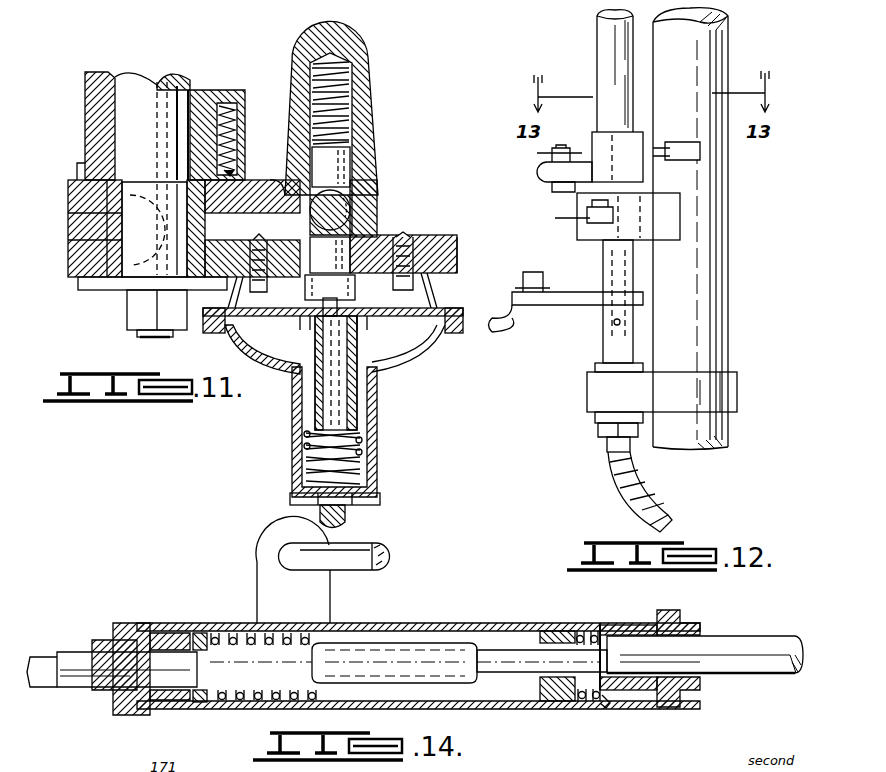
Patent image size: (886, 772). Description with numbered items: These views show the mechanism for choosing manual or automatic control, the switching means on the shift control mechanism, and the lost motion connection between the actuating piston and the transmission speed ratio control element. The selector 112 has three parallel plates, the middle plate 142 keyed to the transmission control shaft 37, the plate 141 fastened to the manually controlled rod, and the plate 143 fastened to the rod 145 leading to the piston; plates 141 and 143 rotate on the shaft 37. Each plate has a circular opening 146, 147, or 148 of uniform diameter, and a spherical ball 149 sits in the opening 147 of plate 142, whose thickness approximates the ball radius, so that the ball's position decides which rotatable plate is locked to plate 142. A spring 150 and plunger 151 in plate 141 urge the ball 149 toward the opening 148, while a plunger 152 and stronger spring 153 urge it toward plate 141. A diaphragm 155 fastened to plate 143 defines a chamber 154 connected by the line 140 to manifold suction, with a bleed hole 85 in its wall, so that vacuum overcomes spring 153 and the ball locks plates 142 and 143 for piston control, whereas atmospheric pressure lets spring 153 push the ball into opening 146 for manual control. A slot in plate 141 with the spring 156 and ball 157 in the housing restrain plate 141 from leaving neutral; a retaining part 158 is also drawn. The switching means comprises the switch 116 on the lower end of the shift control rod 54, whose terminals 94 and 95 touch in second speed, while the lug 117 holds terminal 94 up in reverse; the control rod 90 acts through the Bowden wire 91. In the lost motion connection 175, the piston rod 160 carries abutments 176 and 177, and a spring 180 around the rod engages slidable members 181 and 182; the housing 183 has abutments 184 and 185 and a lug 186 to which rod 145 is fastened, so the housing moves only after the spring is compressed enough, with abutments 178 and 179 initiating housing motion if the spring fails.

In FIG. 11, the transmission control shaft 37 is at (185, 82).
In FIG. 11, the valve casing upright 158 is at (195, 175).
In FIG. 11, the spring 156 is at (240, 107).
In FIG. 11, the ball 157 is at (232, 172).
In FIG. 11, the transverse circular opening 146 is at (300, 190).
In FIG. 11, the spring 150 is at (352, 78).
In FIG. 11, the plunger 151 is at (352, 160).
In FIG. 11, the spherical ball 149 is at (345, 200).
In FIG. 11, the plate 141 is at (350, 215).
In FIG. 11, the middle plate 142 is at (352, 228).
In FIG. 11, the transverse circular opening 147 is at (402, 236).
In FIG. 11, the selector 112 is at (445, 236).
In FIG. 11, the plate 143 is at (458, 250).
In FIG. 11, the transverse circular opening 148 is at (256, 271).
In FIG. 11, the cover plate 85 is at (435, 302).
In FIG. 11, the plunger 152 is at (362, 300).
In FIG. 11, the diaphragm 155 is at (275, 318).
In FIG. 11, the chamber 154 is at (272, 372).
In FIG. 11, the spring 153 is at (366, 441).
In FIG. 11, the line 140 is at (348, 520).
In FIG. 11, the transmission shift control rod 145 is at (362, 570).
In FIG. 11, the lug 186 is at (322, 612).
In FIG. 12, the control rod 90 is at (600, 112).
In FIG. 12, the lug 117 is at (702, 150).
In FIG. 12, the switch 116 is at (548, 170).
In FIG. 12, the terminal 94 is at (553, 193).
In FIG. 12, the terminal 95 is at (580, 196).
In FIG. 12, the tube 54 is at (514, 335).
In FIG. 12, the Bowden wire 91 is at (640, 500).
In FIG. 14, the piston rod 160 is at (737, 678).
In FIG. 14, the abutment 177 is at (178, 700).
In FIG. 14, the abutment 185 is at (198, 633).
In FIG. 14, the slidable member 182 is at (212, 632).
In FIG. 14, the abutment 179 is at (302, 702).
In FIG. 14, the housing 183 is at (440, 630).
In FIG. 14, the abutment 178 is at (494, 698).
In FIG. 14, the lost motion connection 175 is at (548, 695).
In FIG. 14, the spring 180 is at (565, 625).
In FIG. 14, the slidable member 181 is at (594, 628).
In FIG. 14, the abutment 184 is at (648, 625).
In FIG. 14, the abutment 176 is at (610, 700).